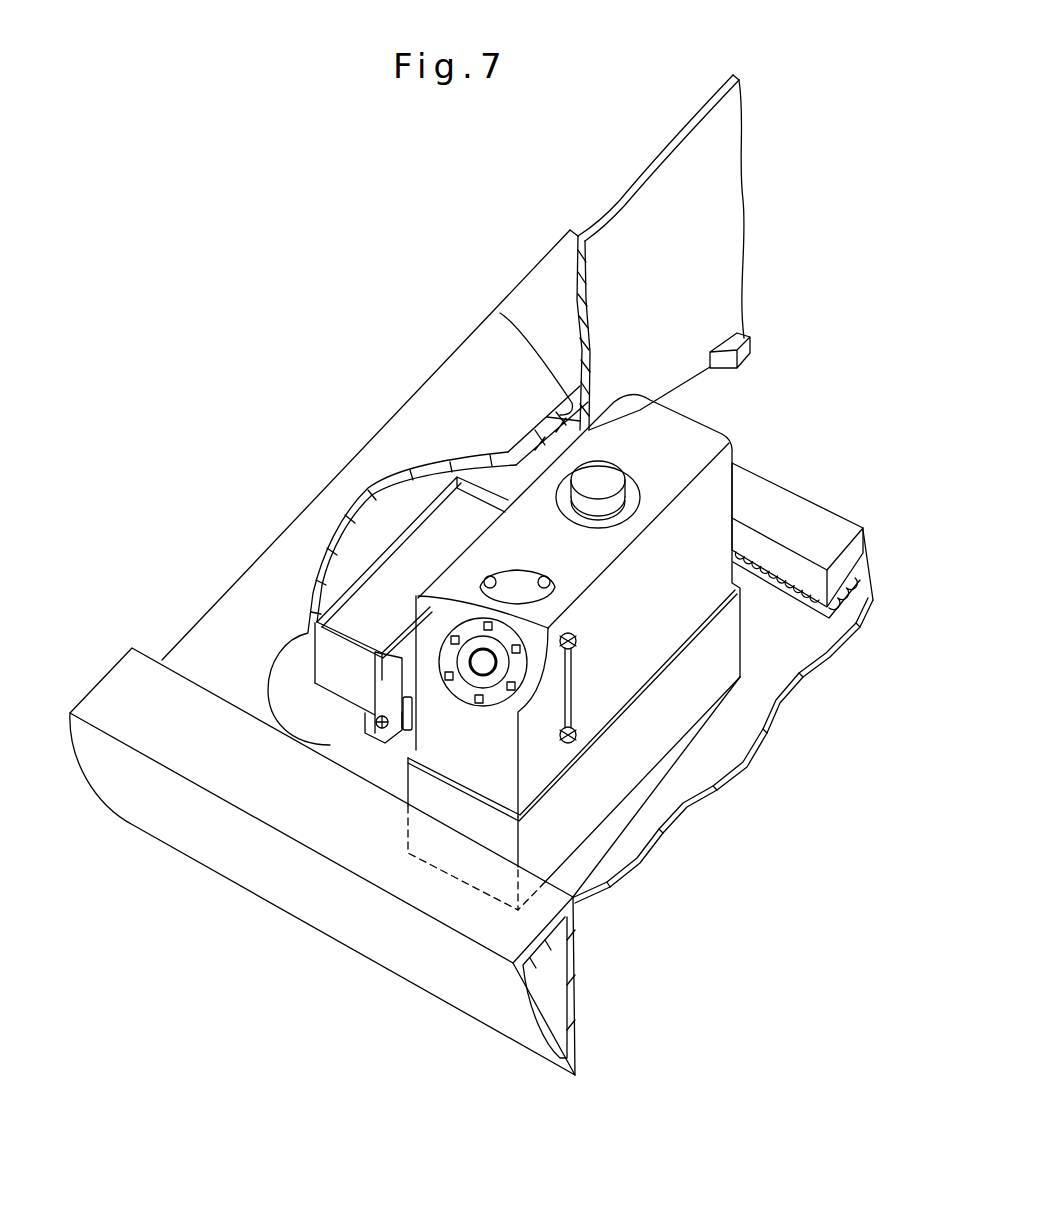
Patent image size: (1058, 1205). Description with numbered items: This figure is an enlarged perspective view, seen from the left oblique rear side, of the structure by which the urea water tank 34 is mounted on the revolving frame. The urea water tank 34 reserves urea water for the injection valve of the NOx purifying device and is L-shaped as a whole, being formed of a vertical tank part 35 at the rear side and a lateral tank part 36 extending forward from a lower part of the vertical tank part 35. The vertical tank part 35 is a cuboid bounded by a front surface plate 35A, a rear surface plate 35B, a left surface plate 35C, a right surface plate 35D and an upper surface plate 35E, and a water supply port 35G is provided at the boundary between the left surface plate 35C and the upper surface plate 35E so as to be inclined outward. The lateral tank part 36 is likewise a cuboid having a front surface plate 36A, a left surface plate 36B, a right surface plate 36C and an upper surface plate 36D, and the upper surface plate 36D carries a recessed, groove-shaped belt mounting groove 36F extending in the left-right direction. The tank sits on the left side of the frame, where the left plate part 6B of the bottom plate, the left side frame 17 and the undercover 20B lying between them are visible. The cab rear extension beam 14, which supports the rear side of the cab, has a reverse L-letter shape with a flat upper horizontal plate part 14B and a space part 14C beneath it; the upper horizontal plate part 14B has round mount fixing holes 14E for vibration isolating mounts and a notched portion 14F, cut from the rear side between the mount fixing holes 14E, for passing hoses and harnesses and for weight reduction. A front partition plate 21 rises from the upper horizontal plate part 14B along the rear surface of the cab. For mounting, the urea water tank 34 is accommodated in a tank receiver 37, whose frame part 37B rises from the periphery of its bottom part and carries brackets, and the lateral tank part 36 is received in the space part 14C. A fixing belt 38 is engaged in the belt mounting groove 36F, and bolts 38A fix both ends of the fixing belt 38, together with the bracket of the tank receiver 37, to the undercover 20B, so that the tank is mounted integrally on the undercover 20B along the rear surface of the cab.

The front partition plate 21 is at (720, 198).
The cab rear extension beam 14 is at (292, 565).
The notched portion 14F is at (500, 313).
The upper horizontal plate part 14B is at (414, 433).
The space part 14C is at (407, 497).
The mount fixing holes 14E is at (275, 660).
The lateral tank part 36 is at (407, 550).
The front surface plate 36A is at (289, 561).
The left surface plate 36B is at (310, 652).
The right surface plate 36C is at (488, 492).
The upper surface plate 36D is at (400, 567).
The belt mounting groove 36F is at (310, 620).
The vertical tank part 35 is at (650, 632).
The front surface plate 35A is at (534, 480).
The rear surface plate 35B is at (598, 692).
The left surface plate 35C is at (477, 753).
The right surface plate 35D is at (733, 500).
The upper surface plate 35E is at (658, 433).
The water supply port 35G is at (572, 758).
The urea water tank 34 is at (719, 423).
The tank receiver 37 is at (556, 846).
The frame part 37B is at (720, 657).
The left plate part 6B is at (807, 520).
The undercover 20B is at (817, 640).
The left side frame 17 is at (240, 780).
The fixing belt 38 is at (372, 715).
The bolts 38A is at (382, 728).